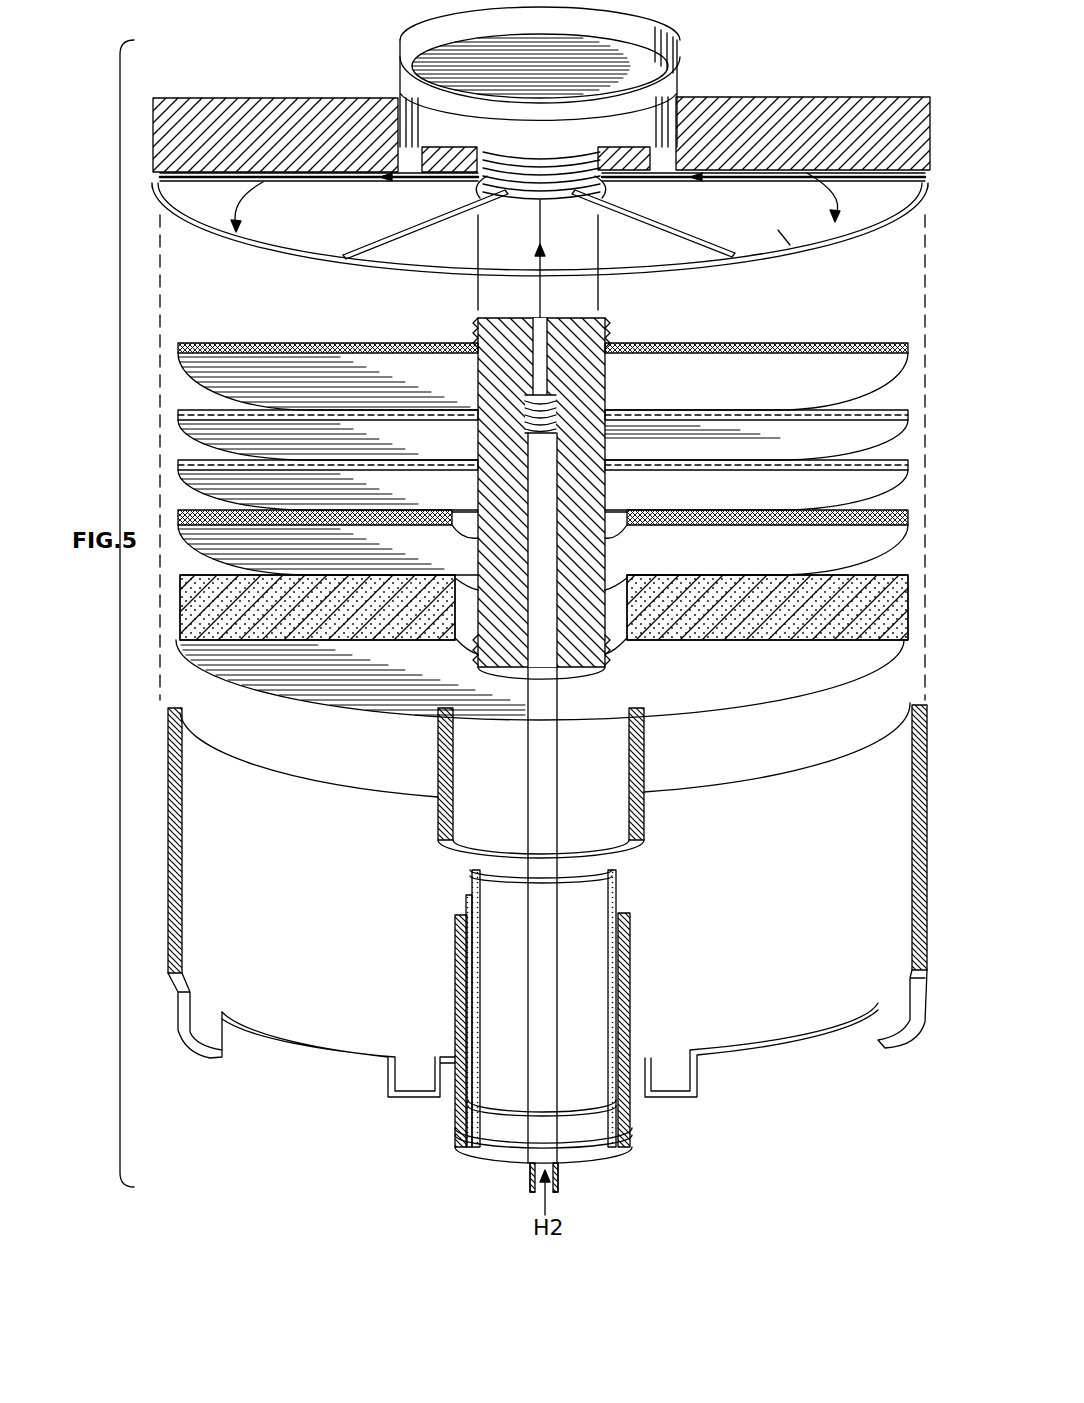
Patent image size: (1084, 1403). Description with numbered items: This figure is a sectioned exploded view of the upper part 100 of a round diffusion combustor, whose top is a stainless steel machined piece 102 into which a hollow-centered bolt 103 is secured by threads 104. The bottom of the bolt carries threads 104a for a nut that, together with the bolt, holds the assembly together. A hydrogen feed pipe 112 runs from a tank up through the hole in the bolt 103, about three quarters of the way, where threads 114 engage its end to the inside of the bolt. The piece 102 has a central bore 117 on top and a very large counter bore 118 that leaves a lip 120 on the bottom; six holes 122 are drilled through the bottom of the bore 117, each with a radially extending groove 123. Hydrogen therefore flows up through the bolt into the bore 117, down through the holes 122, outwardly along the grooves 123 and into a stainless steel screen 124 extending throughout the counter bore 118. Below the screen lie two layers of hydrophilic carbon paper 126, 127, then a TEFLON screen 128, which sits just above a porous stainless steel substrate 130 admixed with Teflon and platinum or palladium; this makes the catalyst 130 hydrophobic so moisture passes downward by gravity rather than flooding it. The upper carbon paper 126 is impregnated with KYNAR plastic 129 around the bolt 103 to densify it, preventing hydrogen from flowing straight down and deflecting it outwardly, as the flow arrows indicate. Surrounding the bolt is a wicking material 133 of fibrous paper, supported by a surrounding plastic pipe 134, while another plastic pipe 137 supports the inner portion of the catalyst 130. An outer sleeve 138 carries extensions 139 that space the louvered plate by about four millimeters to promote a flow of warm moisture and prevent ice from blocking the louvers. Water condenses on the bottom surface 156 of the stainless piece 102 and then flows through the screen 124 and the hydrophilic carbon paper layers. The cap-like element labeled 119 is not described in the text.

The upper part 100 is at (228, 74).
The stainless steel machined piece 102 is at (345, 98).
The hollow-centered bolt 103 is at (470, 322).
The threads 104 is at (537, 173).
The threads 104a is at (600, 653).
The hydrogen feed pipe 112 is at (557, 1150).
The threads 114 is at (560, 400).
The central bore 117 is at (658, 104).
The counter bore 118 is at (783, 237).
The cap 119 is at (680, 50).
The lip 120 is at (845, 233).
The holes 122 is at (417, 157).
The radially extending groove 123 is at (345, 177).
The stainless steel screen 124 is at (820, 337).
The hydrophilic carbon paper 126 is at (810, 408).
The hydrophilic carbon paper 127 is at (810, 457).
The TEFLON screen 128 is at (810, 510).
The KYNAR plastic 129 is at (668, 420).
The porous stainless steel substrate 130 is at (797, 570).
The wicking material 133 is at (622, 894).
The plastic pipe 134 is at (632, 1010).
The plastic pipe 137 is at (645, 790).
The outer sleeve 138 is at (910, 753).
The extensions 139 is at (228, 1037).
The bottom surface 156 is at (670, 252).